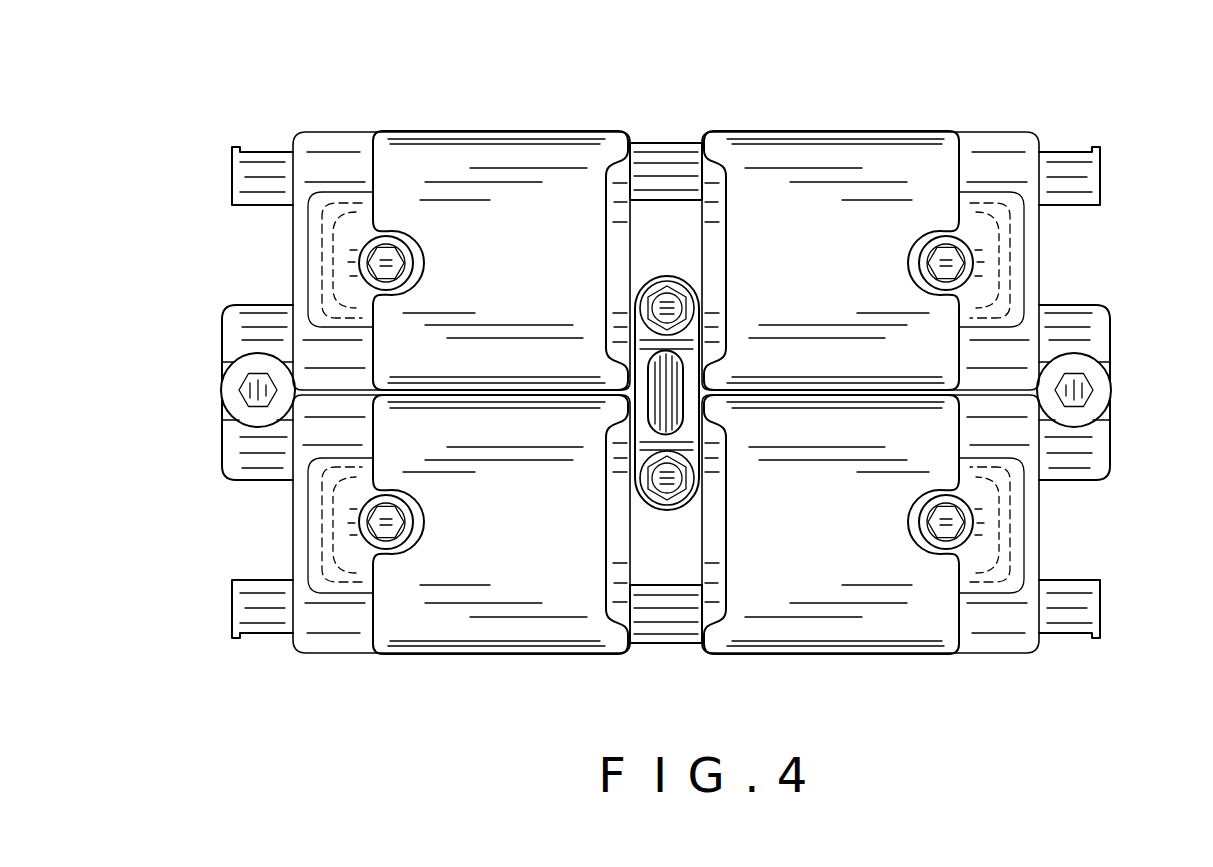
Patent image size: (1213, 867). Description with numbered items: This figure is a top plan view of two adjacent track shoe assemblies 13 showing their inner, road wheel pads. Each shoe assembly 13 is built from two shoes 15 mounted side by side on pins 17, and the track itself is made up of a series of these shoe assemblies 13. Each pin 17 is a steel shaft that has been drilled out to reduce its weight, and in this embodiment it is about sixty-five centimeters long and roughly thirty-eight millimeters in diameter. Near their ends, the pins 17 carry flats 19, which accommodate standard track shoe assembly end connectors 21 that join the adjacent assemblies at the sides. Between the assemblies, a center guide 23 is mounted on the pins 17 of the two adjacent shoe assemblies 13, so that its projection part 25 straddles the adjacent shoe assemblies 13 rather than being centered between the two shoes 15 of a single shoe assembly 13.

The track shoe assembly 13 is at (678, 128).
The shoe 15 is at (520, 146).
The pin 17 is at (1076, 180).
The flat 19 is at (261, 150).
The end connector 21 is at (257, 312).
The center guide 23 is at (666, 252).
The projection part 25 is at (658, 417).